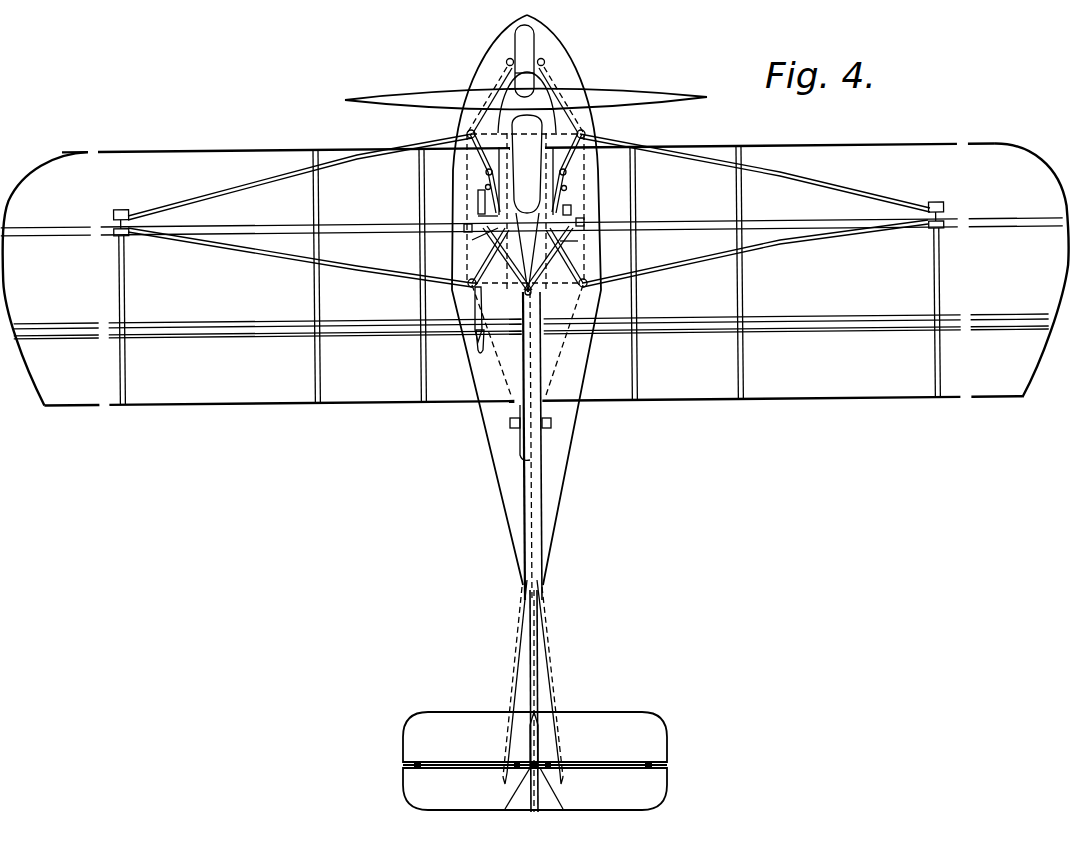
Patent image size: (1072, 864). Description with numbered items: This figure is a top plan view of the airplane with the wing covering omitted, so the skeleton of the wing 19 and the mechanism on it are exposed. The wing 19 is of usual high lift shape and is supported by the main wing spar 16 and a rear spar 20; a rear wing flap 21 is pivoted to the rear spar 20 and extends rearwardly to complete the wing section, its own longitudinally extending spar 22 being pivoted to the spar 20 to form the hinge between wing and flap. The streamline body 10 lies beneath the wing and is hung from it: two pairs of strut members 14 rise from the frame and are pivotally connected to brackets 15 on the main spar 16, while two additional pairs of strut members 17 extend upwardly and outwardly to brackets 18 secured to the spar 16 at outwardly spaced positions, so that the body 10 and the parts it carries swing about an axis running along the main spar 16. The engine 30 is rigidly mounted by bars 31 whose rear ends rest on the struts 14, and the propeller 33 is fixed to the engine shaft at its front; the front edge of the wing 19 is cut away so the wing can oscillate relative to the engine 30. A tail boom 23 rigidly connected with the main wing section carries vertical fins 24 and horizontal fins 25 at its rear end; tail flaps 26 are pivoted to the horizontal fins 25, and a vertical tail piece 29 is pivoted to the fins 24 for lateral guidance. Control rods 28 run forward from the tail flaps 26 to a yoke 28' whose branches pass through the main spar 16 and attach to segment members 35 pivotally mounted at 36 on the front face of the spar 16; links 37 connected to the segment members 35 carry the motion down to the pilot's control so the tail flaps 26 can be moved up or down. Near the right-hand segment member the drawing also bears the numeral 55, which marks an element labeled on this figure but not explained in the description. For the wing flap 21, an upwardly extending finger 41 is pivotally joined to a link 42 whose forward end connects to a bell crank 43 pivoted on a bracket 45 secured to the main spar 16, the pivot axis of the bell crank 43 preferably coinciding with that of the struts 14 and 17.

The body 10 is at (568, 447).
The strut members 14 is at (483, 158).
The brackets 15 is at (466, 229).
The main wing spar 16 is at (684, 230).
The strut members 17 is at (210, 196).
The brackets 18 is at (112, 220).
The wing 19 is at (900, 154).
The rear spar 20 is at (866, 323).
The rear wing flap 21 is at (290, 395).
The spar 22 is at (677, 339).
The tail boom 23 is at (530, 648).
The vertical fins 24 is at (538, 732).
The horizontal fins 25 is at (442, 720).
The tail flaps 26 is at (408, 787).
The control rods 28 is at (527, 505).
The yoke 28' is at (438, 248).
The vertical tail piece 29 is at (540, 787).
The engine 30 is at (545, 118).
The bars 31 is at (468, 132).
The propeller 33 is at (443, 102).
The segment members 35 is at (486, 187).
The pivot 36 is at (571, 210).
The links 37 is at (578, 241).
The finger 41 is at (479, 336).
The link 42 is at (479, 290).
The bell crank 43 is at (478, 204).
The bracket 45 is at (478, 216).
The pivot 55 is at (566, 188).